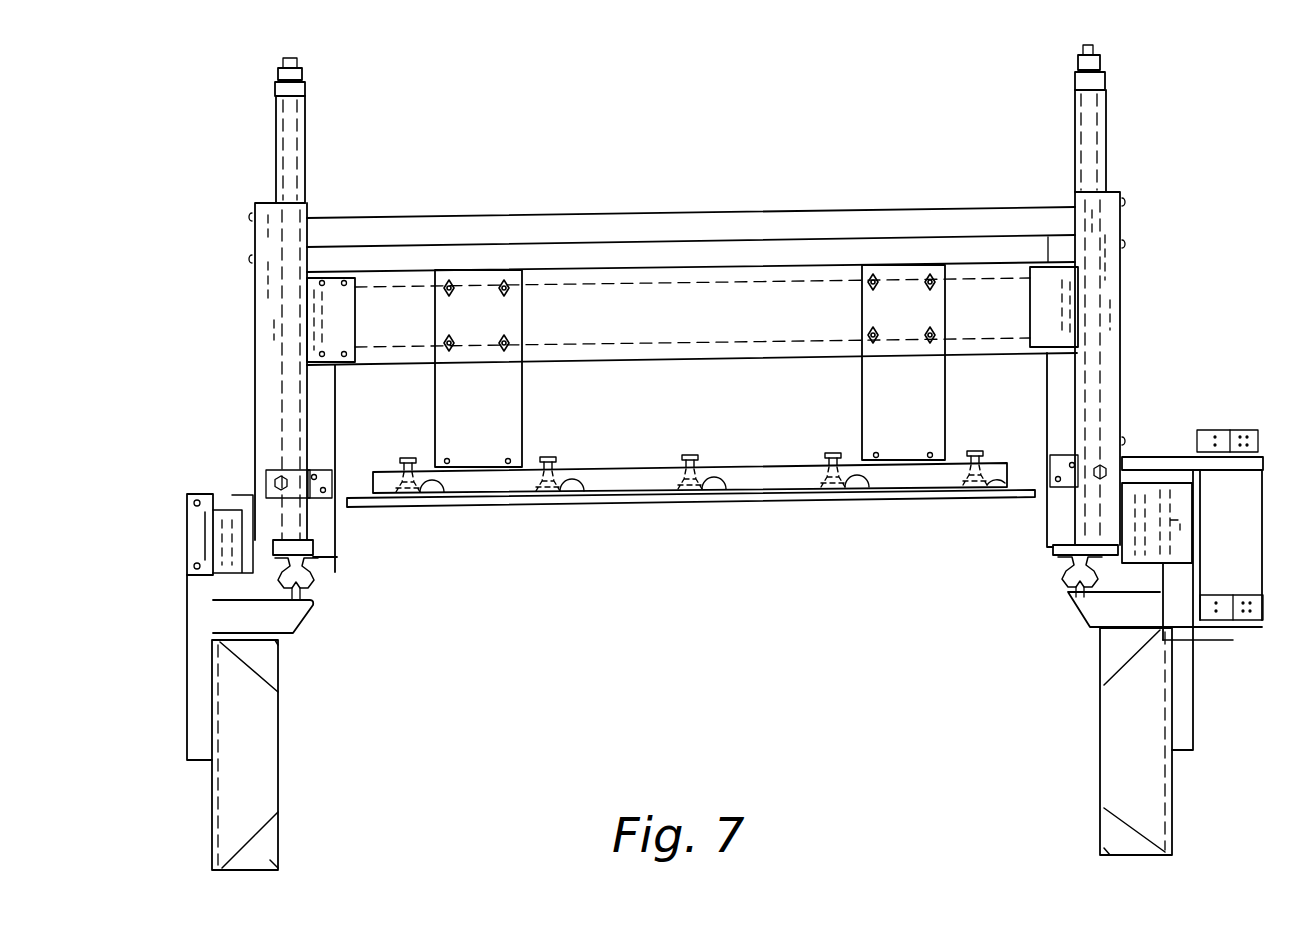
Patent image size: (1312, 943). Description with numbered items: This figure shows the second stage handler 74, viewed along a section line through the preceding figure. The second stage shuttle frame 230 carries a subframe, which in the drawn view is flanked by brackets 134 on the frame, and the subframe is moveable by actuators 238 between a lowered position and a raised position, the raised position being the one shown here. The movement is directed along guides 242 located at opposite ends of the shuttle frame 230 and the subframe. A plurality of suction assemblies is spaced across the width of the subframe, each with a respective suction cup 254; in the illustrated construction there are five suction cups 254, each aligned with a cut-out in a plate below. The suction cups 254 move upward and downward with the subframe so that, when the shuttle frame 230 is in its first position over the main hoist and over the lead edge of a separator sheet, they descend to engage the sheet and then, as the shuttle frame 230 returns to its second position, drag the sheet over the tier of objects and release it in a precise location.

The second stage handler 74 is at (1156, 124).
The second stage shuttle frame 230 is at (826, 215).
The mounting bracket 134 is at (507, 414).
The actuators 238 is at (308, 161).
The guides 242 is at (288, 410).
The suction cups 254 is at (452, 492).